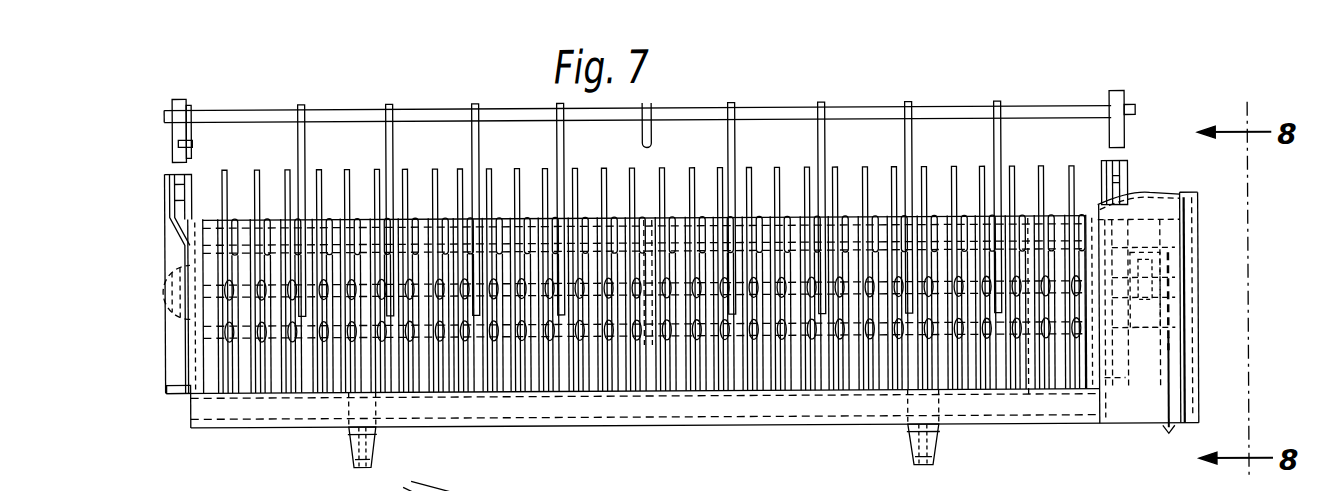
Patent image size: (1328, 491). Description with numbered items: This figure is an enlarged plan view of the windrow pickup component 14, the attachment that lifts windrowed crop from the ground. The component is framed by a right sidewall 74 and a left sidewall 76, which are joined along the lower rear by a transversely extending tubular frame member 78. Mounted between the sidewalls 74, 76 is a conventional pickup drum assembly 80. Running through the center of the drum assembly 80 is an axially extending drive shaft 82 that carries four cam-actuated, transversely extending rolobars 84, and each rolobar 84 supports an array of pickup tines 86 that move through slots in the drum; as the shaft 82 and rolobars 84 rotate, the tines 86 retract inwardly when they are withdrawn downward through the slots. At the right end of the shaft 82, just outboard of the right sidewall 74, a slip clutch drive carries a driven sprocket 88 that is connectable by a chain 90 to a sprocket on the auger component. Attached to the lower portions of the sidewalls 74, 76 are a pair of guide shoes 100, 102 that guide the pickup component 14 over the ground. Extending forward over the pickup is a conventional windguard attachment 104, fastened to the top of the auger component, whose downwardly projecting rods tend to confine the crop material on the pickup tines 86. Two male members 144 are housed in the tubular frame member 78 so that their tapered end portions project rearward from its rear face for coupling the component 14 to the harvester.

The windrow pickup component 14 is at (1091, 89).
The right sidewall 74 is at (1112, 400).
The left sidewall 76 is at (190, 352).
The tubular frame member 78 is at (715, 426).
The pickup drum assembly 80 is at (649, 174).
The drive shaft 82 is at (1170, 281).
The rolobars 84 is at (1028, 398).
The pickup tines 86 is at (376, 168).
The driven sprocket 88 is at (1170, 320).
The chain 90 is at (1170, 375).
The guide shoe 100 is at (1130, 172).
The guide shoe 102 is at (165, 190).
The windguard attachment 104 is at (297, 108).
The male member 144 is at (372, 448).